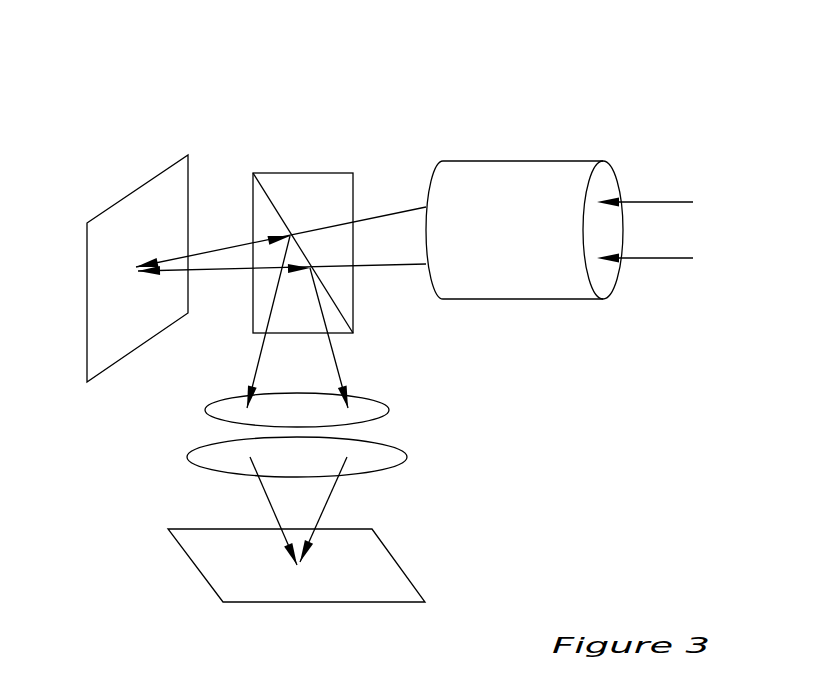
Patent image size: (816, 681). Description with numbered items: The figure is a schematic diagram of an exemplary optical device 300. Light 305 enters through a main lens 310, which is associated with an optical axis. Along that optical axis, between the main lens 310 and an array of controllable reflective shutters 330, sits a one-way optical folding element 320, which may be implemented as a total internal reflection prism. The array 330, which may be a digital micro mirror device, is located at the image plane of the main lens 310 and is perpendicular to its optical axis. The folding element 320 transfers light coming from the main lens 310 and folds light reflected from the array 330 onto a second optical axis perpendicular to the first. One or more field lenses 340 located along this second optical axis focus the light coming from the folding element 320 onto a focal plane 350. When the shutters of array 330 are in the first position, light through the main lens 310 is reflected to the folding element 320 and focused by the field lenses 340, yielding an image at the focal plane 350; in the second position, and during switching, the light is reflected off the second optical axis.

The optical device 300 is at (574, 468).
The incoming light 305 is at (680, 202).
The main lens 310 is at (488, 161).
The one-way optical folding element 320 is at (302, 173).
The array of controllable reflective shutters 330 is at (128, 195).
The field lenses 340 is at (182, 429).
The focal plane 350 is at (218, 563).